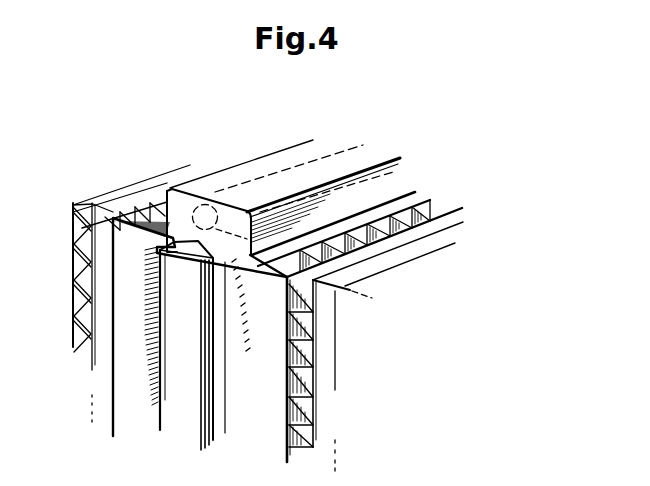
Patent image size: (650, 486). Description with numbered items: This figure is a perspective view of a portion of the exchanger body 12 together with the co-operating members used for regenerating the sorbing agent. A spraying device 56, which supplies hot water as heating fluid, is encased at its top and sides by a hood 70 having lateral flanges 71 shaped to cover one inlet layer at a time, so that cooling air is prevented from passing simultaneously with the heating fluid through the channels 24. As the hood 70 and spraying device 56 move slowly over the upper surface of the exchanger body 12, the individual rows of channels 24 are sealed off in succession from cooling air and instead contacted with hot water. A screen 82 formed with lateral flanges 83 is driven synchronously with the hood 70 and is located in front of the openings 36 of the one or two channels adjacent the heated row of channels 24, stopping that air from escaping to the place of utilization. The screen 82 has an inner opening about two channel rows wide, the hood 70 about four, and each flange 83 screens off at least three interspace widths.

The exchanger body 12 is at (463, 262).
The channels 24 is at (153, 191).
The openings 36 is at (118, 277).
The spraying device 56 is at (213, 228).
The hood 70 is at (311, 144).
The lateral flanges 71 is at (135, 217).
The screen 82 is at (216, 430).
The lateral flanges 83 is at (118, 377).